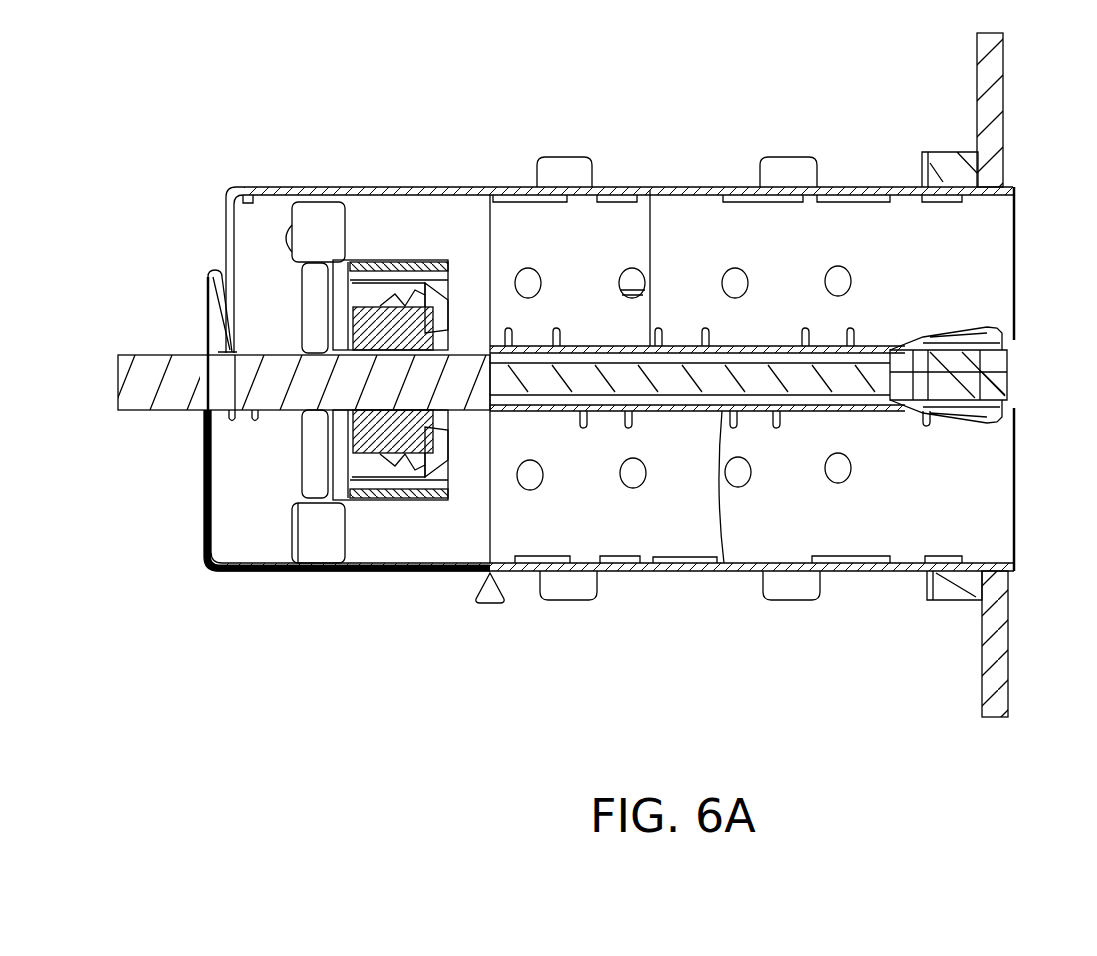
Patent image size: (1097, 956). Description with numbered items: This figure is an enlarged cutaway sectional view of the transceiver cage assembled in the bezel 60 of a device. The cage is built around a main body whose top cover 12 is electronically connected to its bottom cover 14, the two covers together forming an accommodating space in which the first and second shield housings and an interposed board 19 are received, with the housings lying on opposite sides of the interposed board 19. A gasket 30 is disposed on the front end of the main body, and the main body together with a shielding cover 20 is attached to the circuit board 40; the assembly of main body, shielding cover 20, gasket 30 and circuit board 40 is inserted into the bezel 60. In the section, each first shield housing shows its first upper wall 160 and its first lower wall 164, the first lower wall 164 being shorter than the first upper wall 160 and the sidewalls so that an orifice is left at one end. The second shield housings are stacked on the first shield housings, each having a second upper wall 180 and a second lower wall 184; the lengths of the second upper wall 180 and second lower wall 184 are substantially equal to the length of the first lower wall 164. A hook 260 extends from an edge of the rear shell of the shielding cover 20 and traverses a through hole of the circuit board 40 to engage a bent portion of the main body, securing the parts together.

The top cover 12 is at (888, 178).
The bottom cover 14 is at (884, 574).
The interposed board 19 is at (965, 372).
The shielding cover 20 is at (343, 575).
The gasket 30 is at (946, 160).
The circuit board 40 is at (146, 395).
The bezel 60 is at (990, 118).
The first upper wall 160 is at (750, 165).
The first lower wall 164 is at (650, 190).
The second upper wall 180 is at (648, 568).
The second lower wall 184 is at (724, 565).
The hook 260 is at (218, 275).